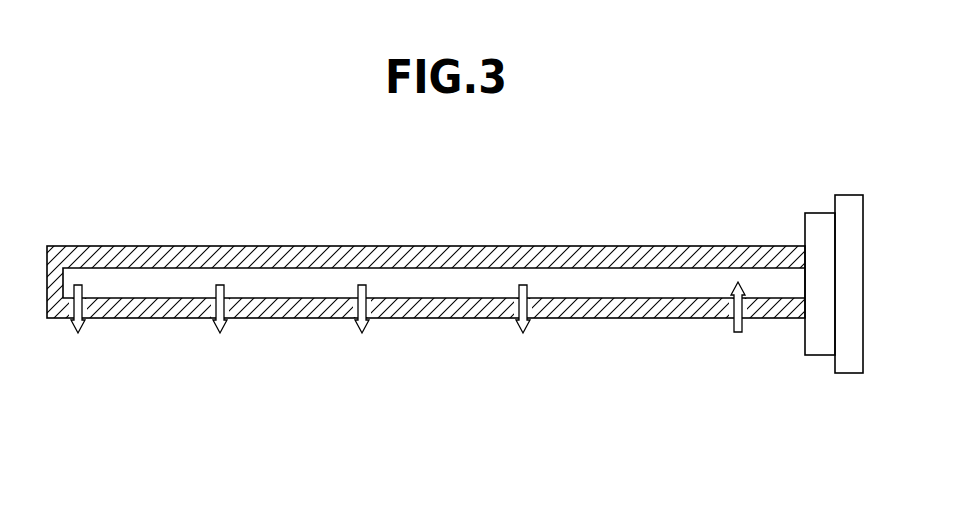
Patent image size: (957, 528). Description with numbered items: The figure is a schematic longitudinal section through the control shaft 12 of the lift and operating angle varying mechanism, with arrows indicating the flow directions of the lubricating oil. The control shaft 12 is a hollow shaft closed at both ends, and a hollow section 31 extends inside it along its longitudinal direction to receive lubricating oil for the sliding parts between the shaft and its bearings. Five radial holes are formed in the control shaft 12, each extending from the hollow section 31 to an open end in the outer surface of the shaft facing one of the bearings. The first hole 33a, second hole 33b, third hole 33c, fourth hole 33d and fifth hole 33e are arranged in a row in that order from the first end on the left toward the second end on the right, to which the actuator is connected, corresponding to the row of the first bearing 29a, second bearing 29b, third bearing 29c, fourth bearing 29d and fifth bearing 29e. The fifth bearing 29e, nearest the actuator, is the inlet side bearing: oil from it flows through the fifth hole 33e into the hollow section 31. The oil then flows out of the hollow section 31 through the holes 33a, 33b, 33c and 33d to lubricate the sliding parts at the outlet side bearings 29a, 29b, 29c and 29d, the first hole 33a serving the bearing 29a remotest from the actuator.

The control shaft 12 is at (475, 240).
The hollow section 31 is at (620, 278).
The first hole 33a is at (88, 290).
The second hole 33b is at (231, 290).
The third hole 33c is at (372, 290).
The fourth hole 33d is at (532, 290).
The fifth hole 33e is at (749, 288).
The first bearing 29a is at (80, 370).
The second bearing 29b is at (220, 370).
The third bearing 29c is at (362, 370).
The fourth bearing 29d is at (523, 370).
The fifth bearing 29e is at (740, 370).